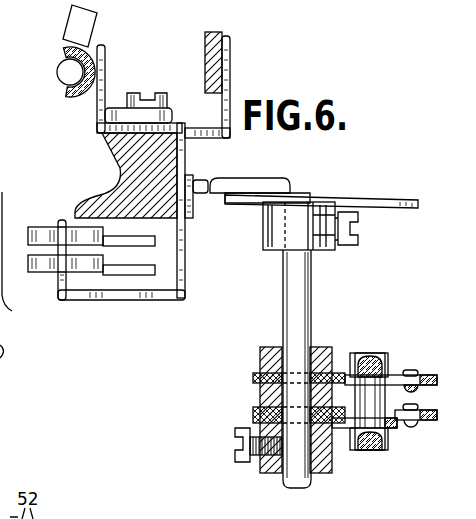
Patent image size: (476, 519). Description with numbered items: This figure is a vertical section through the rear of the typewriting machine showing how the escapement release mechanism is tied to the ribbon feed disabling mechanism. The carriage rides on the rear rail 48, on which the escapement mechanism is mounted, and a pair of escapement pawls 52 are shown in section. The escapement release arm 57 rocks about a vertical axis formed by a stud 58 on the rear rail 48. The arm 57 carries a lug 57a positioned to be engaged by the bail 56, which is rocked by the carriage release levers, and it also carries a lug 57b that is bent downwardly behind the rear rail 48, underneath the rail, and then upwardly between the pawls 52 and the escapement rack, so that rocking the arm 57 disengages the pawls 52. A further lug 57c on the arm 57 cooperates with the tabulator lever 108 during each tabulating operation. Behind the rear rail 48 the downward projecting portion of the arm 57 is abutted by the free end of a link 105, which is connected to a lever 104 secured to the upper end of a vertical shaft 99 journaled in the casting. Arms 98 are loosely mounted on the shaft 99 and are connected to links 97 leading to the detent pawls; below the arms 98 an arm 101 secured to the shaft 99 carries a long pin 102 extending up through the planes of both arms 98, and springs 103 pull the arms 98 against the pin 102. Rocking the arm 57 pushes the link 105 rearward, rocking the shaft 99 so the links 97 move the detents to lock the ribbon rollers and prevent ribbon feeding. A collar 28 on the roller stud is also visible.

The collar 28 is at (20, 260).
The rear rail 48 is at (137, 160).
The pawls 52 is at (41, 262).
The bail 56 is at (66, 91).
The escapement release arm 57 is at (187, 122).
The lug 57a is at (107, 55).
The lug or arm 57b is at (97, 300).
The lug 57c is at (231, 55).
The stud 58 is at (138, 93).
The links 97 is at (415, 383).
The arms 98 is at (340, 373).
The vertical shaft 99 is at (290, 300).
The arm 101 is at (345, 428).
The long pin 102 is at (374, 402).
The springs 103 is at (368, 354).
The lever 104 is at (327, 196).
The link 105 is at (221, 184).
The tabulator lever 108 is at (206, 45).